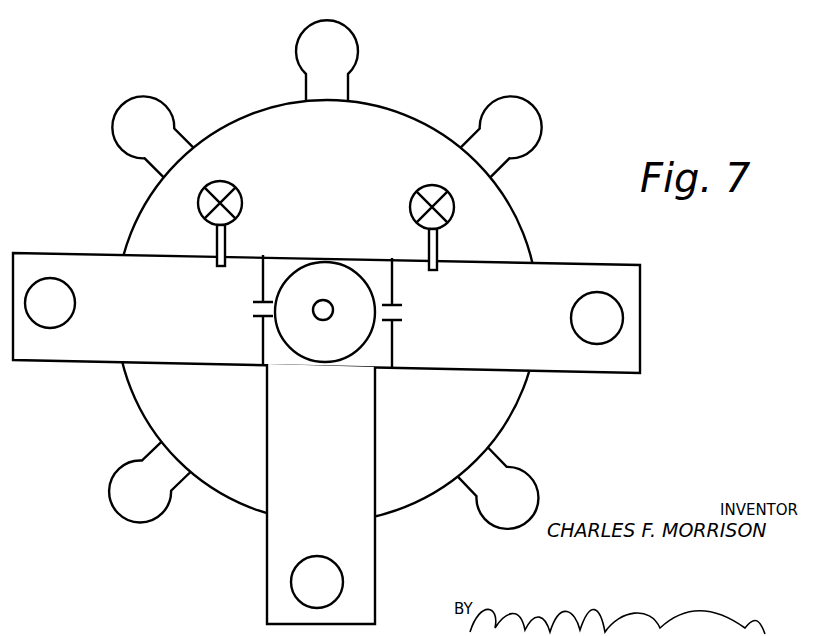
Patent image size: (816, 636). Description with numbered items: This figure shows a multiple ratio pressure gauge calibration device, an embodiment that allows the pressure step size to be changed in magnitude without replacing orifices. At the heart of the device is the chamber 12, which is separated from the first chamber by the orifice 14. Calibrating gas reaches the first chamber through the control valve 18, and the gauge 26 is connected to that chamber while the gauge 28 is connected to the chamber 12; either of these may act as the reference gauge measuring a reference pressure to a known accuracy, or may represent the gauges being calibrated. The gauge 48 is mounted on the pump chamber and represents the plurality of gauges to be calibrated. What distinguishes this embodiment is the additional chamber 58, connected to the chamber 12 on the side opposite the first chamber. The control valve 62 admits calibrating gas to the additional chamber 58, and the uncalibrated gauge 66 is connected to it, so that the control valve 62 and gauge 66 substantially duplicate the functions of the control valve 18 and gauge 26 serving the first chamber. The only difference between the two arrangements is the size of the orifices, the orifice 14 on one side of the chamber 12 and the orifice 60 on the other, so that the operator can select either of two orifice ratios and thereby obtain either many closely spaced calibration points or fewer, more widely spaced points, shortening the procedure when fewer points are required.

The chamber 12 is at (276, 567).
The orifice 14 is at (255, 312).
The control valve 18 is at (244, 203).
The gauge 26 is at (62, 326).
The gauge 28 is at (333, 581).
The gauge 48 is at (170, 105).
The additional chamber 58 is at (566, 267).
The orifice 60 is at (398, 312).
The control valve 62 is at (410, 206).
The uncalibrated gauge 66 is at (620, 333).